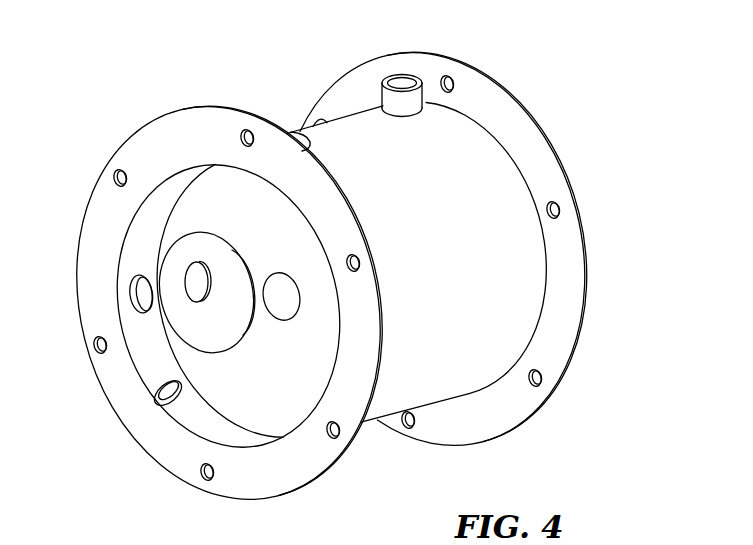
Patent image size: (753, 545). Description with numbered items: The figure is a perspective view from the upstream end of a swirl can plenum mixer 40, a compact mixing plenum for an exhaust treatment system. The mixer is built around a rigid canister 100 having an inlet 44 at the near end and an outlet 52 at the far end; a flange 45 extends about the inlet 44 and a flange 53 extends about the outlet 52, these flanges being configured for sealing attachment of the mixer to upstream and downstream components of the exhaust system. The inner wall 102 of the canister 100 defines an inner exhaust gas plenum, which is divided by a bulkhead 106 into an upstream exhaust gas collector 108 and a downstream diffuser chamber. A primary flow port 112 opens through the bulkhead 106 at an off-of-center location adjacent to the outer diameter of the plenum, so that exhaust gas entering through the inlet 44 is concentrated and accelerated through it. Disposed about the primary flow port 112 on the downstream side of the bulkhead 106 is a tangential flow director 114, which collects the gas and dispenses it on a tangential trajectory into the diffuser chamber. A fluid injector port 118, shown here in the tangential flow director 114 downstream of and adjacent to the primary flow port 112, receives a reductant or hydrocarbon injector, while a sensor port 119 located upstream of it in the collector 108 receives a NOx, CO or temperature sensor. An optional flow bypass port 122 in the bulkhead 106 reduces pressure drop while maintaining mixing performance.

The swirl can plenum mixer 40 is at (327, 281).
The inlet 44 is at (150, 223).
The flange 45 is at (113, 153).
The outlet 52 is at (480, 133).
The flange 53 is at (416, 96).
The rigid canister 100 is at (508, 266).
The inner wall 102 is at (187, 410).
The bulkhead 106 is at (240, 408).
The upstream exhaust gas collector 108 is at (270, 397).
The primary flow port 112 is at (187, 320).
The tangential flow director 114 is at (182, 307).
The fluid injector port 118 is at (193, 270).
The sensor port 119 is at (130, 293).
The flow bypass port 122 is at (283, 302).